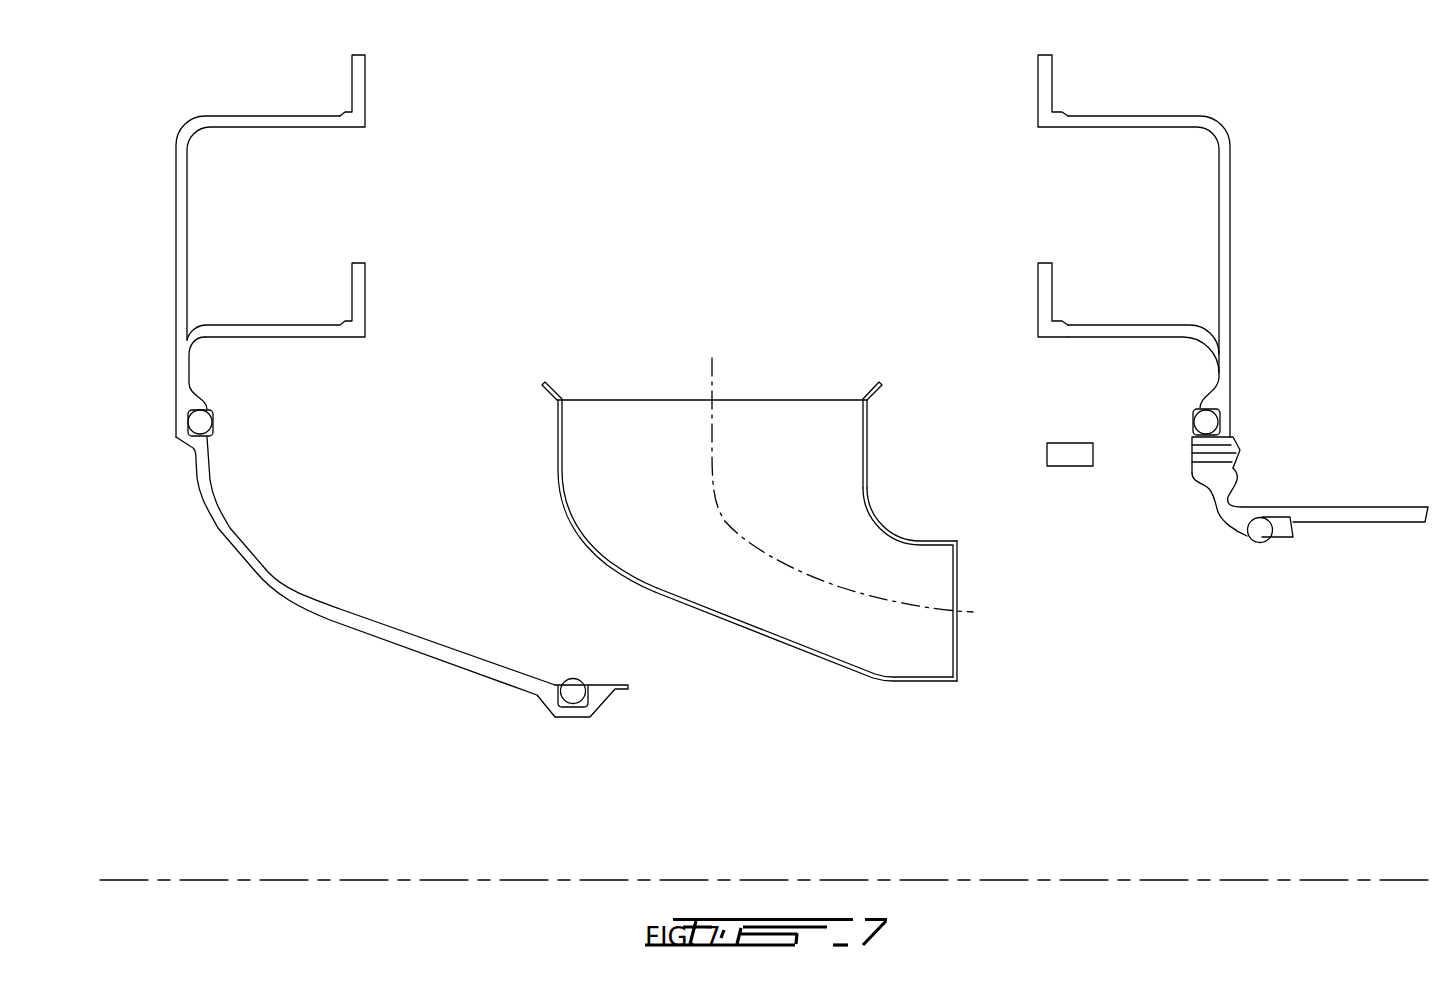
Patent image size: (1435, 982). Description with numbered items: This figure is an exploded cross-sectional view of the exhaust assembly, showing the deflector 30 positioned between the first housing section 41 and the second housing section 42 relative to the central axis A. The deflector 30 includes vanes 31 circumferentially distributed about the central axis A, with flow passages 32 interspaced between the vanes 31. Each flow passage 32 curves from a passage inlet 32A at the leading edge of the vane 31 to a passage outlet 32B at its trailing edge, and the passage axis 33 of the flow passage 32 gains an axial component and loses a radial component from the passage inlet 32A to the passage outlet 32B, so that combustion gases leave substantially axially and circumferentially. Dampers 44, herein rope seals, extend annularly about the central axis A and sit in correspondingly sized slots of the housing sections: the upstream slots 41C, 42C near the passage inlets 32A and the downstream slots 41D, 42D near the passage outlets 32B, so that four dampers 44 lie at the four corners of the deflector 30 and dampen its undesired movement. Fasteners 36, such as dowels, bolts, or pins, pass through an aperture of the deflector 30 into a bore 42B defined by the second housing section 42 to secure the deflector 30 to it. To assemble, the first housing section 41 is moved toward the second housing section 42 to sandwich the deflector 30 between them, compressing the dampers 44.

The deflector 30 is at (758, 320).
The vanes 31 is at (818, 430).
The flow passages 32 is at (823, 529).
The passage inlets 32A is at (632, 400).
The passage outlets 32B is at (957, 585).
The passage axes 33 is at (712, 460).
The fasteners 36 is at (1073, 468).
The first housing section 41 is at (268, 116).
The upstream slot 41C is at (190, 437).
The downstream slot 41D is at (583, 706).
The second housing section 42 is at (1133, 116).
The bore 42B is at (1232, 438).
The upstream slot 42C is at (1219, 411).
The downstream slot 42D is at (1293, 523).
The dampers 44 is at (205, 422).
The central axis A is at (1237, 880).